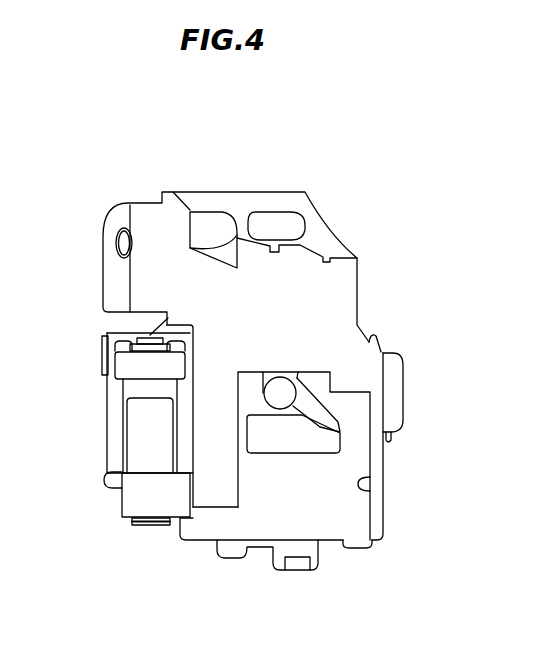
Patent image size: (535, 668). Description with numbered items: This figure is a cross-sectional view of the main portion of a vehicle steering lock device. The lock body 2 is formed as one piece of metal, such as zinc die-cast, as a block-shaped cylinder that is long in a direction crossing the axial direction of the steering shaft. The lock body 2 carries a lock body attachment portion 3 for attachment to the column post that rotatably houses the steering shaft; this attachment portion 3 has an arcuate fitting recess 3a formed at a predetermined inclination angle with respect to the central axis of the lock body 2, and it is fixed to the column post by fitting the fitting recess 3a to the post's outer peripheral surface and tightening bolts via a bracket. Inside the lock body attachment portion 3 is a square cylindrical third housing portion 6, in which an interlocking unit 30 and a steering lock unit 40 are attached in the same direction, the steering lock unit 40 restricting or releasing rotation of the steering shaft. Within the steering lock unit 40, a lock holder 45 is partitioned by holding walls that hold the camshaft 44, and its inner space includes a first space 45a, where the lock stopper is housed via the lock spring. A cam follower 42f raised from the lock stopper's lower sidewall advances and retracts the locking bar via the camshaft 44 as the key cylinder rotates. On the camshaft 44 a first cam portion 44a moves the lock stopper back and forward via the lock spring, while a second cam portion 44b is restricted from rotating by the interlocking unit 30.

The lock body 2 is at (373, 281).
The lock body attachment portion 3 is at (157, 217).
The fitting recess 3a is at (229, 202).
The interlocking unit 30 is at (96, 520).
The steering lock unit 40 is at (351, 576).
The camshaft 44 is at (282, 390).
The first cam portion 44a is at (312, 402).
The second cam portion 44b is at (268, 373).
The cam follower 42f is at (320, 425).
The lock holder 45 is at (353, 517).
The first space 45a is at (358, 438).
The third housing portion 6 is at (366, 484).